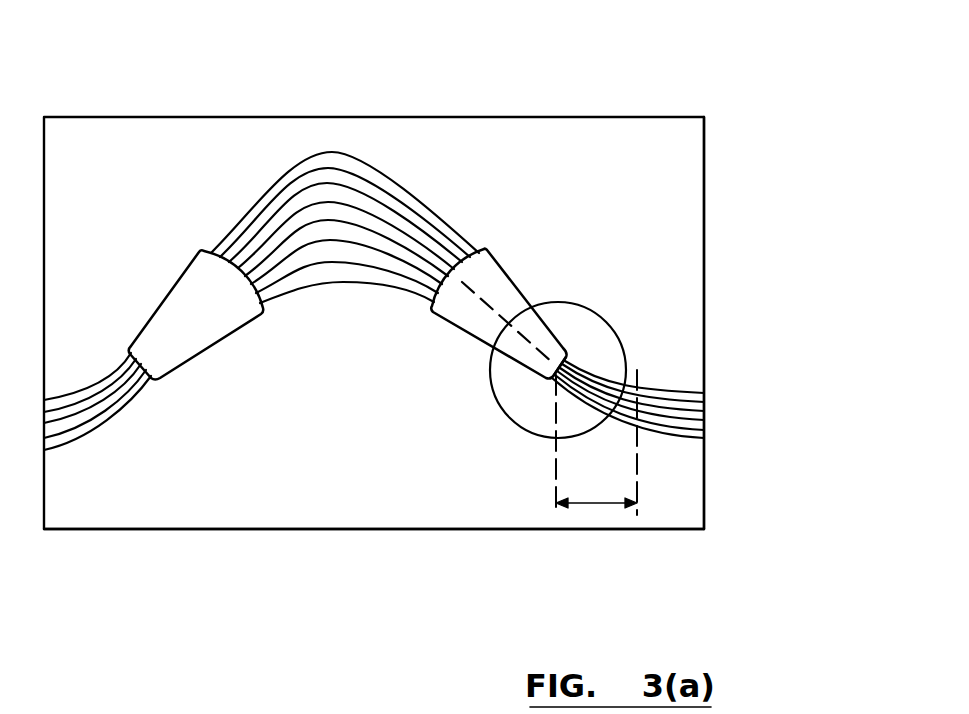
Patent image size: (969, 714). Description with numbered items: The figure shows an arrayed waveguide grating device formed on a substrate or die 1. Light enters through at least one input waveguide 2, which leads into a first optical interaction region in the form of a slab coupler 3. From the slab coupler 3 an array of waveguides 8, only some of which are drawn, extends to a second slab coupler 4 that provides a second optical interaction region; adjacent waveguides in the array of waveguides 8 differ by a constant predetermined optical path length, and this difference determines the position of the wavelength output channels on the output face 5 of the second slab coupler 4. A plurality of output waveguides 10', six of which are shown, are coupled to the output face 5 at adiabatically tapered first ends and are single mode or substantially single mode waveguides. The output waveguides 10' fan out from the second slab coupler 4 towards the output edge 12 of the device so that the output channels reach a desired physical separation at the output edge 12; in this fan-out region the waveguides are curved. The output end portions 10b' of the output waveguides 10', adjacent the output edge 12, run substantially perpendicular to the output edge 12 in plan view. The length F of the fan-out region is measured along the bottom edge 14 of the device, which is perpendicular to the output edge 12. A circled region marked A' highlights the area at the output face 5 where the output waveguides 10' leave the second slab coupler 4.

The substrate 1 is at (447, 117).
The input waveguide 2 is at (108, 433).
The slab coupler 3 is at (217, 346).
The second slab coupler 4 is at (460, 333).
The output face 5 is at (573, 349).
The array of waveguides 8 is at (437, 201).
The output waveguides 10' is at (574, 429).
The output end portions 10b' is at (693, 452).
The output edge 12 is at (703, 312).
The bottom edge 14 is at (597, 530).
The fiber exit region A' is at (558, 322).
The length of the fan-out region F is at (596, 442).